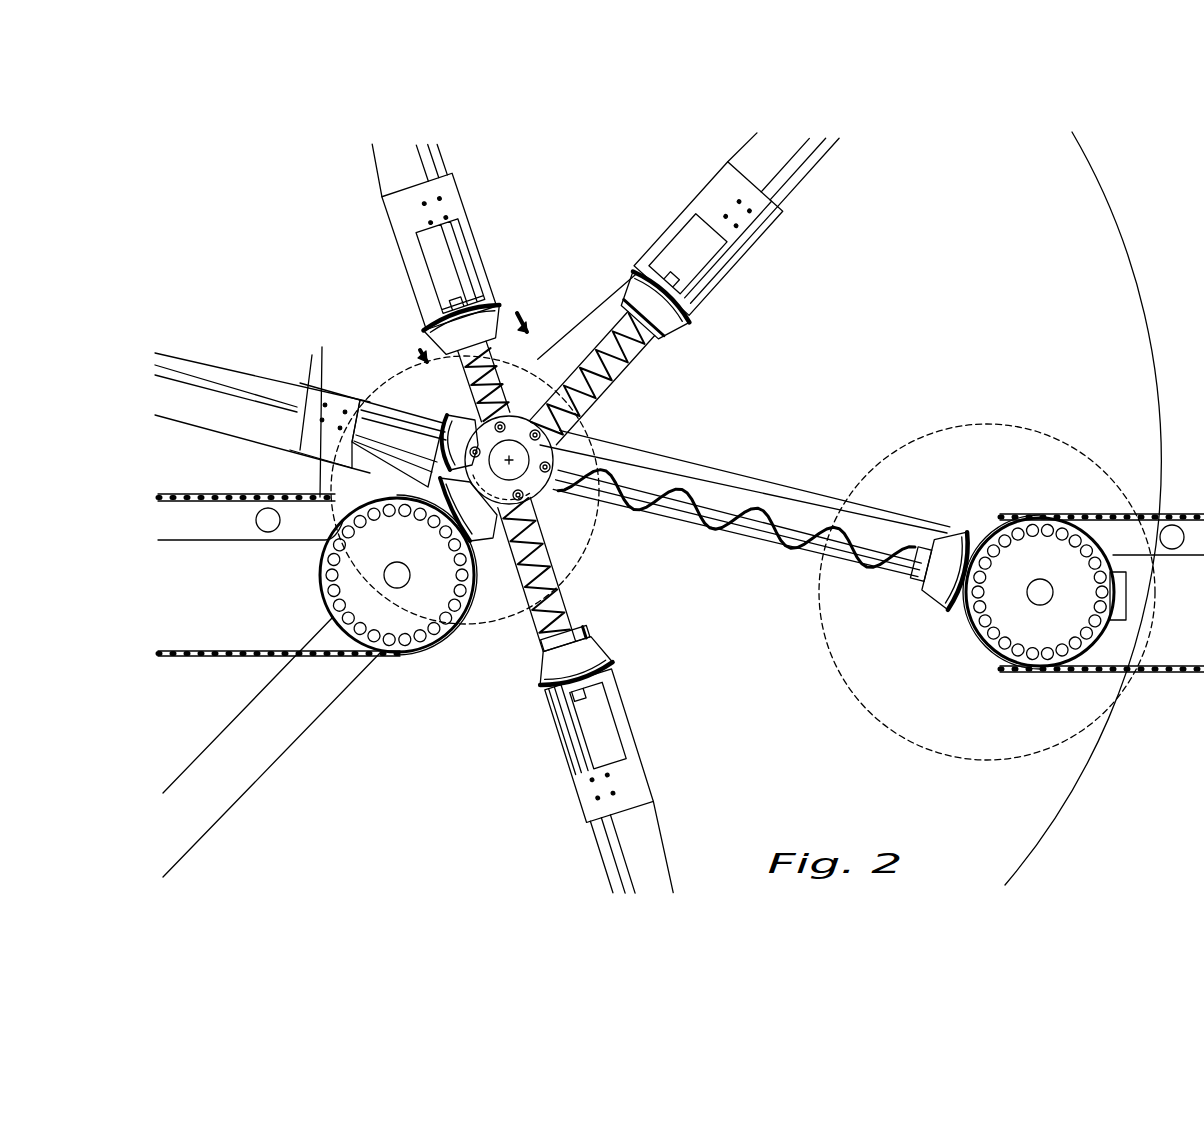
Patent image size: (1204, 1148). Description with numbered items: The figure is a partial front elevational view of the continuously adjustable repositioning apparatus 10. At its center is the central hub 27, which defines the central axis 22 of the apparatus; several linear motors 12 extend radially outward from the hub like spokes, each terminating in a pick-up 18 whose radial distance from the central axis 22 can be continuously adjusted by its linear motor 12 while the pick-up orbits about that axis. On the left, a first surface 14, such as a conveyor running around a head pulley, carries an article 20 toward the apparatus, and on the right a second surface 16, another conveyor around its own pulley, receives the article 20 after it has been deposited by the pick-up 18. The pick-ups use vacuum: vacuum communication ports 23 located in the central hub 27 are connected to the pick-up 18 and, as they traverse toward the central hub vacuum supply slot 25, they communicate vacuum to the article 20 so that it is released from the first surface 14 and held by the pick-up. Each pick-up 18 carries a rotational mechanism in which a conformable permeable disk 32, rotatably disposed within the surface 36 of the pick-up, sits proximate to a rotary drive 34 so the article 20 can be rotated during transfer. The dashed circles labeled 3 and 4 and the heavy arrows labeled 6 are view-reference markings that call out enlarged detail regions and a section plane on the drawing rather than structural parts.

The continuously adjustable repositioning apparatus 10 is at (865, 254).
The linear motor 12 is at (470, 200).
The first surface 14 is at (217, 500).
The second surface 16 is at (1105, 428).
The pick-up 18 is at (938, 522).
The article 20 is at (293, 497).
The central axis 22 is at (512, 458).
The vacuum communication ports 23 is at (540, 438).
The central hub vacuum supply slot 25 is at (553, 485).
The central hub 27 is at (547, 432).
The conformable permeable disk 32 is at (613, 668).
The rotary drive 34 is at (583, 645).
The surface 36 is at (535, 683).
The detail circle for FIG. 3 is at (485, 622).
The detail circle for FIG. 4 is at (925, 752).
The section line 6- 6 is at (474, 353).